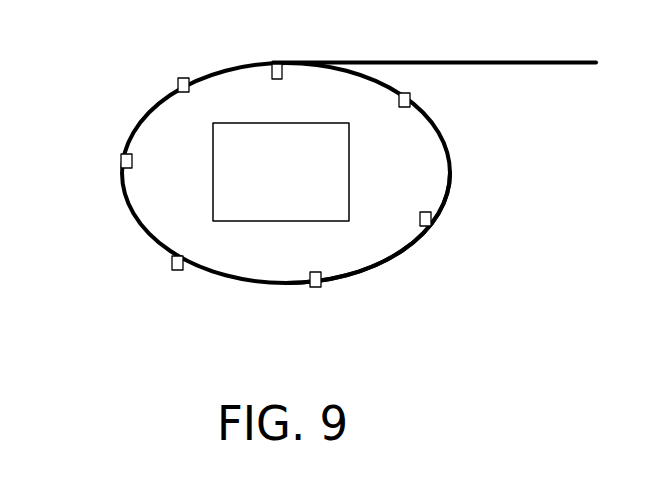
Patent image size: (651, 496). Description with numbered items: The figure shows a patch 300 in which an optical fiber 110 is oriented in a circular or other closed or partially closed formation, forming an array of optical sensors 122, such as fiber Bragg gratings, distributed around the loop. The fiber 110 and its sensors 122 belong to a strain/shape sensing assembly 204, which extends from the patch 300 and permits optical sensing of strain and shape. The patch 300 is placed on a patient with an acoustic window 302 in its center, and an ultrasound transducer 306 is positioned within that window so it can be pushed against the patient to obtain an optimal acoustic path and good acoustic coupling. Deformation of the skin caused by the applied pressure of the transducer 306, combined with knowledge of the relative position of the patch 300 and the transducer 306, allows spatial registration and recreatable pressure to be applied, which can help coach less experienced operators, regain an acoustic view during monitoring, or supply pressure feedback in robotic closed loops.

The patch 300 is at (111, 233).
The fiber 110 is at (132, 127).
The acoustic window 302 is at (377, 242).
The strain/shape sensing assembly 204 is at (491, 60).
The transducer 306 is at (299, 182).
The sensors 122 is at (273, 64).